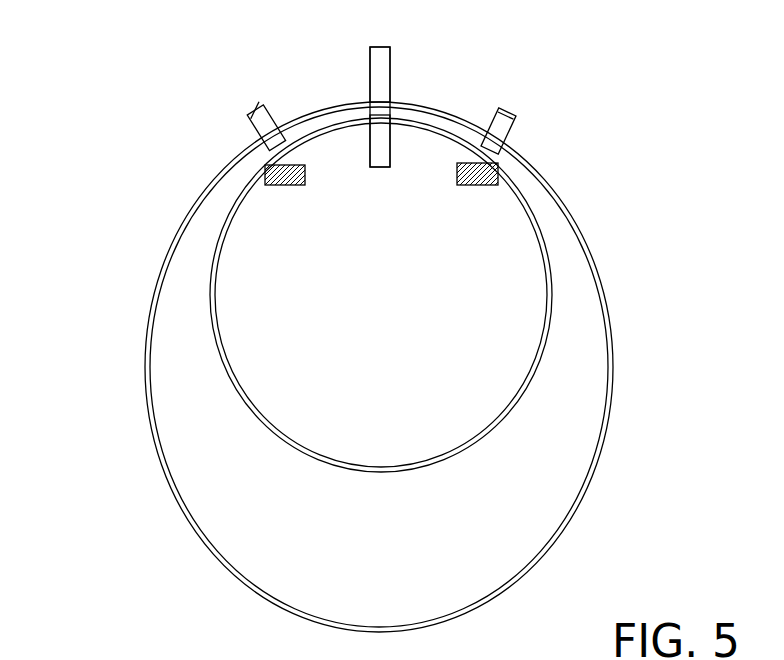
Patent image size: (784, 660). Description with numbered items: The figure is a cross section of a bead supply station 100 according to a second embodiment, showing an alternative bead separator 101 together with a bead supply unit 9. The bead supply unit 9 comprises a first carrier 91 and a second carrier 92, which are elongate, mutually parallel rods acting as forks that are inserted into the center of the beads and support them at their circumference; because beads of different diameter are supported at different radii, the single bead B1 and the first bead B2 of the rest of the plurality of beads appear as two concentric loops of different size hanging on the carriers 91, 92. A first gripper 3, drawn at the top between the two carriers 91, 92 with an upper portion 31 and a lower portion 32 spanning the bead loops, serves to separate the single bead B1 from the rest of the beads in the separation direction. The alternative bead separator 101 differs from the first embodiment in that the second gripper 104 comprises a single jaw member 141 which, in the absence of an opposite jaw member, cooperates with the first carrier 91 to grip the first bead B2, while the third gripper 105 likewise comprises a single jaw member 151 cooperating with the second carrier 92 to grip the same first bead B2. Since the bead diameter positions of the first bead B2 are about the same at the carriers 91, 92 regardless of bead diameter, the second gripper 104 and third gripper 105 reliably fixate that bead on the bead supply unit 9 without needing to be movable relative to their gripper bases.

The bead supply station 100 is at (88, 108).
The alternative bead separator 101 is at (182, 142).
The second gripper 104 is at (253, 118).
The single jaw member 141 is at (273, 112).
The single jaw member 151 is at (492, 127).
The third gripper 105 is at (515, 113).
The first gripper 3 is at (381, 66).
The upper portion of connector 31 is at (382, 68).
The lower portion of connector 32 is at (385, 163).
The first carrier 91 is at (281, 186).
The second carrier 92 is at (468, 186).
The bead supply unit 9 is at (433, 223).
The single bead B1 is at (283, 438).
The first bead of the rest of the plurality of beads B2 is at (188, 517).